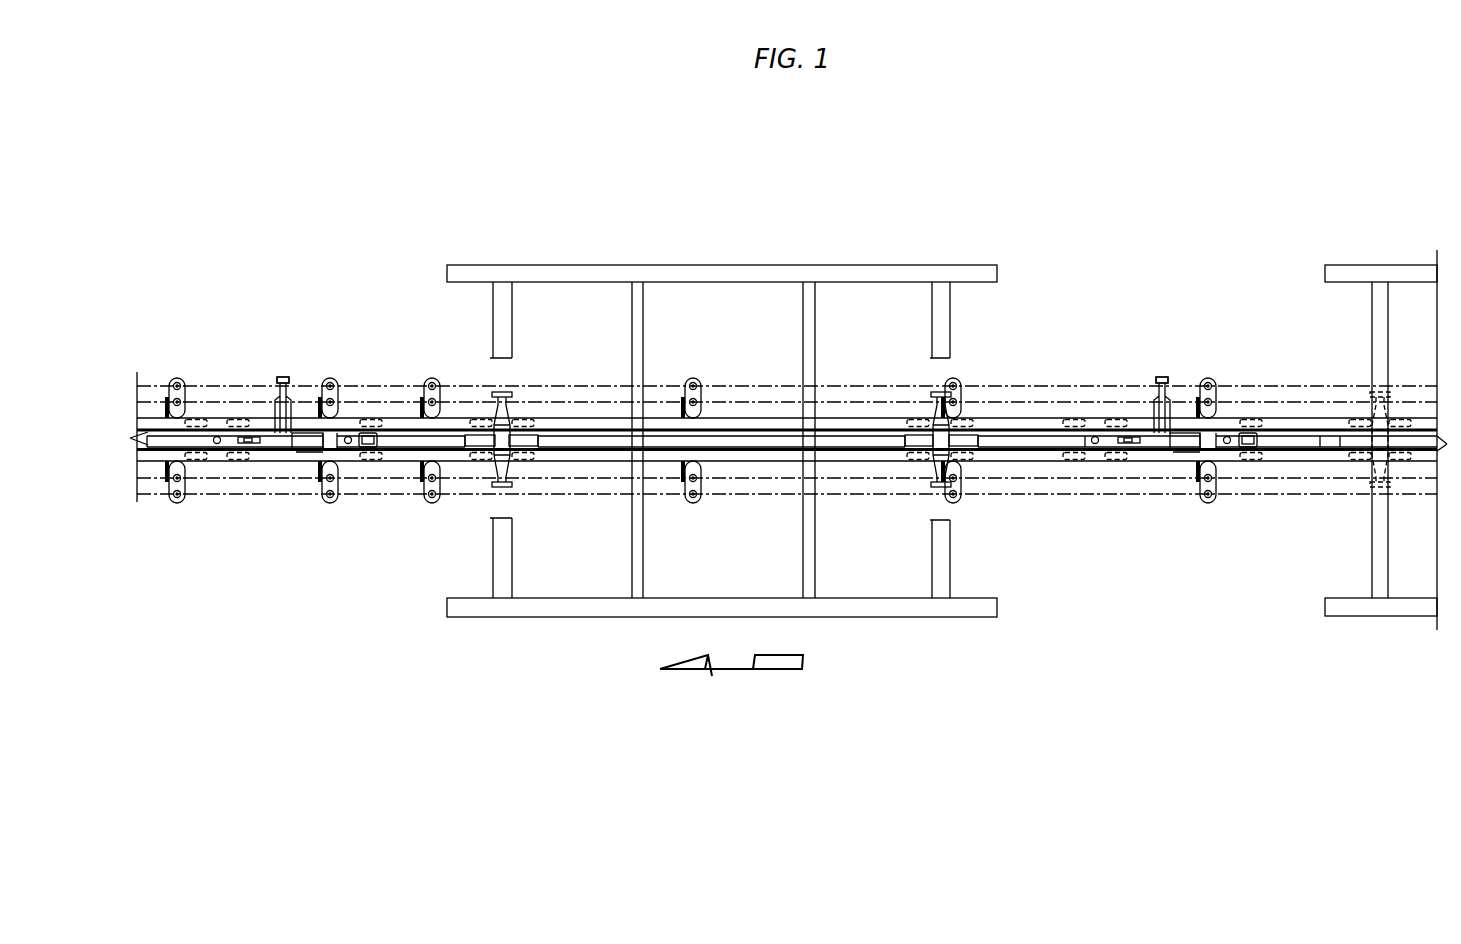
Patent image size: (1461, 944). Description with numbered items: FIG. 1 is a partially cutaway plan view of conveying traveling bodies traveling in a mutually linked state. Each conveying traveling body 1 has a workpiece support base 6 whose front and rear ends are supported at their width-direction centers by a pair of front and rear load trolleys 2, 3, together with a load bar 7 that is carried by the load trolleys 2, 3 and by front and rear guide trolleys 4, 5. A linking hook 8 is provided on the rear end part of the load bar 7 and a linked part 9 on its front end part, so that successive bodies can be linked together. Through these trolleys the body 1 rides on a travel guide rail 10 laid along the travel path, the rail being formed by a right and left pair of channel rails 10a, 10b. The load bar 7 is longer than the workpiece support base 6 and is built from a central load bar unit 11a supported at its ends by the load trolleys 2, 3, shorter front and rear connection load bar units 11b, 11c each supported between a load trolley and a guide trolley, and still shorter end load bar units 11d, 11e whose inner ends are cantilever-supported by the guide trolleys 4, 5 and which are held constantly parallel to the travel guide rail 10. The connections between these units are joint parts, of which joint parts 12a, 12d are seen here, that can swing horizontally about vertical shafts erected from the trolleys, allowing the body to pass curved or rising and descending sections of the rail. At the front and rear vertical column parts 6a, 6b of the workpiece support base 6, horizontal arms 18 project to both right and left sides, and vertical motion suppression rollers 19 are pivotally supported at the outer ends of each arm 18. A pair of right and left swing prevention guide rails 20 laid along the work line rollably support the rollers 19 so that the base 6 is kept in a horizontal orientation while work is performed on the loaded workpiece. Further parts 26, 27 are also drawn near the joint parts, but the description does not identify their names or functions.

The conveying traveling body 1 is at (863, 262).
The front load trolley 2 is at (485, 468).
The rear load trolley 3 is at (917, 410).
The front guide trolley 4 is at (370, 463).
The rear guide trolley 5 is at (196, 468).
The workpiece support base 6 is at (696, 270).
The front vertical column part 6a is at (511, 432).
The rear vertical column part 6b is at (940, 444).
The load bar 7 is at (758, 428).
The linking hook 8 is at (300, 428).
The linked part 9 is at (310, 449).
The travel guide rail 10 is at (787, 444).
The channel rail 10a is at (852, 420).
The channel rail 10b is at (852, 462).
The central load bar unit 11a is at (667, 438).
The connection load bar unit 11b is at (411, 436).
The connection load bar unit 11c is at (156, 430).
The end load bar unit 11d is at (290, 456).
The end load bar unit 11e is at (270, 456).
The joint part 12a is at (348, 424).
The joint part 12d is at (217, 423).
The horizontal arm 18 is at (495, 410).
The vertical motion suppression roller 19 is at (503, 390).
The swing prevention guide rail 20 is at (591, 392).
The pin body 26 is at (276, 394).
The pin head 27 is at (284, 377).